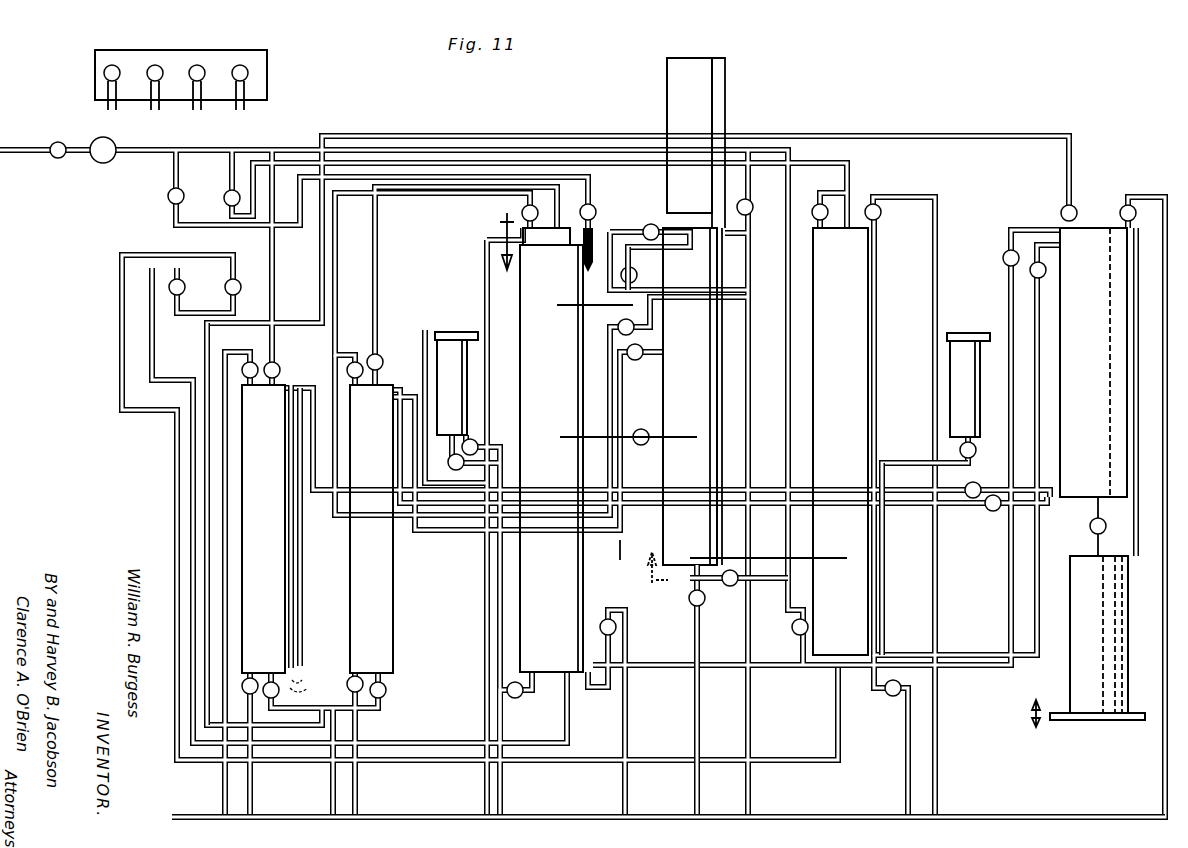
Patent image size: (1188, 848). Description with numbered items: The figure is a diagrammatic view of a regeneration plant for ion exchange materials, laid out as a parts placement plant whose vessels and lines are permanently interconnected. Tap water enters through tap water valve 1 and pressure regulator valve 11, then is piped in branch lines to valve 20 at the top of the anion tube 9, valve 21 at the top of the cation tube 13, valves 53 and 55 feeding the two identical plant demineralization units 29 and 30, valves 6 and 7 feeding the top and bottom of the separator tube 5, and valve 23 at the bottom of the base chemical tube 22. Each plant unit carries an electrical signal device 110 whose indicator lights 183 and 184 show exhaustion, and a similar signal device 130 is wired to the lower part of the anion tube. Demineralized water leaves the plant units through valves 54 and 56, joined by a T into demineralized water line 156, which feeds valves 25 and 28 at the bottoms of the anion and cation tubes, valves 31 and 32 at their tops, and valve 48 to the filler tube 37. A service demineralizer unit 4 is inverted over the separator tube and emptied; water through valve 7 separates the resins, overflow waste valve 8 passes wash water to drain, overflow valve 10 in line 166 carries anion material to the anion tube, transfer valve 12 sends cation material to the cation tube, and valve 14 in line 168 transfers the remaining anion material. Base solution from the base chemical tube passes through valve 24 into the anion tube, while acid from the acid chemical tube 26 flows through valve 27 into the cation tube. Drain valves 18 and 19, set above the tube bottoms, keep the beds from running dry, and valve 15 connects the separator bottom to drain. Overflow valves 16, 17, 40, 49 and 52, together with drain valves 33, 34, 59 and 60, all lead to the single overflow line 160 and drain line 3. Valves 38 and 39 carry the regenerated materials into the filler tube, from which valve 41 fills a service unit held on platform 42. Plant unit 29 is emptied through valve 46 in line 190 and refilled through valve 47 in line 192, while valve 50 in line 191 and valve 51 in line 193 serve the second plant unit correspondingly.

The tap water valve 1 is at (60, 141).
The pressure regulator valve 11 is at (110, 134).
The electrical signal device 110 is at (207, 66).
The indicator light 183 is at (117, 66).
The indicator light 184 is at (160, 66).
The valve 20 is at (168, 196).
The valve 21 is at (224, 196).
The valve 25 is at (185, 285).
The valve 28 is at (236, 278).
The plant demineralization unit 29 is at (270, 440).
The plant demineralization unit 30 is at (380, 434).
The overflow valve 49 is at (258, 368).
The valve 53 is at (281, 370).
The overflow valve 52 is at (360, 364).
The valve 55 is at (382, 360).
The drain valve 59 is at (250, 677).
The valve 54 is at (271, 681).
The drain valve 60 is at (357, 676).
The valve 56 is at (386, 695).
The demineralized water line 156 is at (210, 530).
The line 190 is at (296, 580).
The base chemical tube 22 is at (457, 332).
The valve 24 is at (478, 440).
The valve 23 is at (466, 470).
The anion tube 9 is at (556, 339).
The valve 31 is at (522, 210).
The overflow valve 16 is at (596, 211).
The transfer valve 12 is at (775, 545).
The service demineralizer unit 4 is at (706, 62).
The separator tube 5 is at (700, 359).
The overflow waste valve 8 is at (653, 223).
The line 166 is at (638, 273).
The overflow valve 10 is at (648, 270).
The valve 46 is at (635, 325).
The valve 50 is at (636, 361).
The valve 14 is at (638, 429).
The line 168 is at (656, 446).
The valve 6 is at (753, 211).
The line 191 is at (604, 532).
The drain valve 18 is at (604, 620).
The valve 15 is at (690, 598).
The valve 7 is at (722, 580).
The drain valve 19 is at (808, 620).
The electrical signal device 130 is at (550, 672).
The drain valve 33 is at (510, 684).
The cation tube 13 is at (850, 312).
The valve 32 is at (826, 206).
The overflow valve 17 is at (882, 213).
The line 193 is at (905, 470).
The line 192 is at (895, 522).
The drain valve 34 is at (885, 690).
The overflow line 160 is at (872, 812).
The drain line 3 is at (196, 812).
The acid chemical tube 26 is at (970, 345).
The valve 27 is at (977, 452).
The valve 51 is at (970, 500).
The valve 47 is at (990, 512).
The filler tube 37 is at (1096, 322).
The valve 38 is at (1003, 260).
The valve 39 is at (1047, 270).
The valve 48 is at (1074, 206).
The overflow valve 40 is at (1125, 205).
The valve 41 is at (1107, 526).
The platform 42 is at (1058, 722).